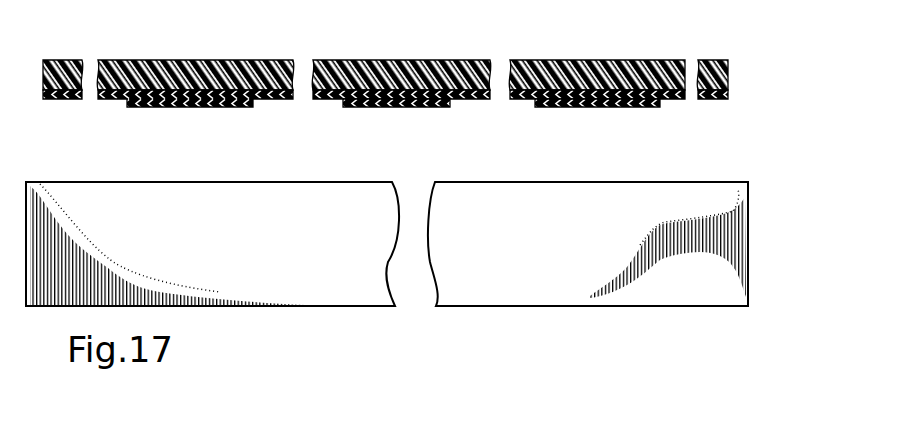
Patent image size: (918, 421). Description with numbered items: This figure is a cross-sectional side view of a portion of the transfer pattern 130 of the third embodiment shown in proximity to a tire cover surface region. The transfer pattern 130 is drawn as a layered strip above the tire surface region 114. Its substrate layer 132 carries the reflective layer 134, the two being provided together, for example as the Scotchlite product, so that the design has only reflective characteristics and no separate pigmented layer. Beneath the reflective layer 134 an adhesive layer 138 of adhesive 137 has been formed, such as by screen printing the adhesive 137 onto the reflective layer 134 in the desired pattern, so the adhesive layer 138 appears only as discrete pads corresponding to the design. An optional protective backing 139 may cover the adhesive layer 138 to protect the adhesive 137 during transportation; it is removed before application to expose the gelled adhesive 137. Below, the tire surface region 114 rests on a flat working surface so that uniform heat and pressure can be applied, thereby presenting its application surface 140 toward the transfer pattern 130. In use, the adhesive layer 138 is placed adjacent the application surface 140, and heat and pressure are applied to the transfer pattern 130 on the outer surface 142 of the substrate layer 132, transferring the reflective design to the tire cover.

The transfer pattern 130 is at (445, 43).
The outer surface 142 is at (337, 58).
The adhesive 137 is at (383, 106).
The protective backing 139 is at (600, 63).
The adhesive layer 138 is at (660, 105).
The substrate layer 132 is at (733, 72).
The reflective layer 134 is at (732, 98).
The application surface 140 is at (577, 182).
The tire surface region 114 is at (515, 290).